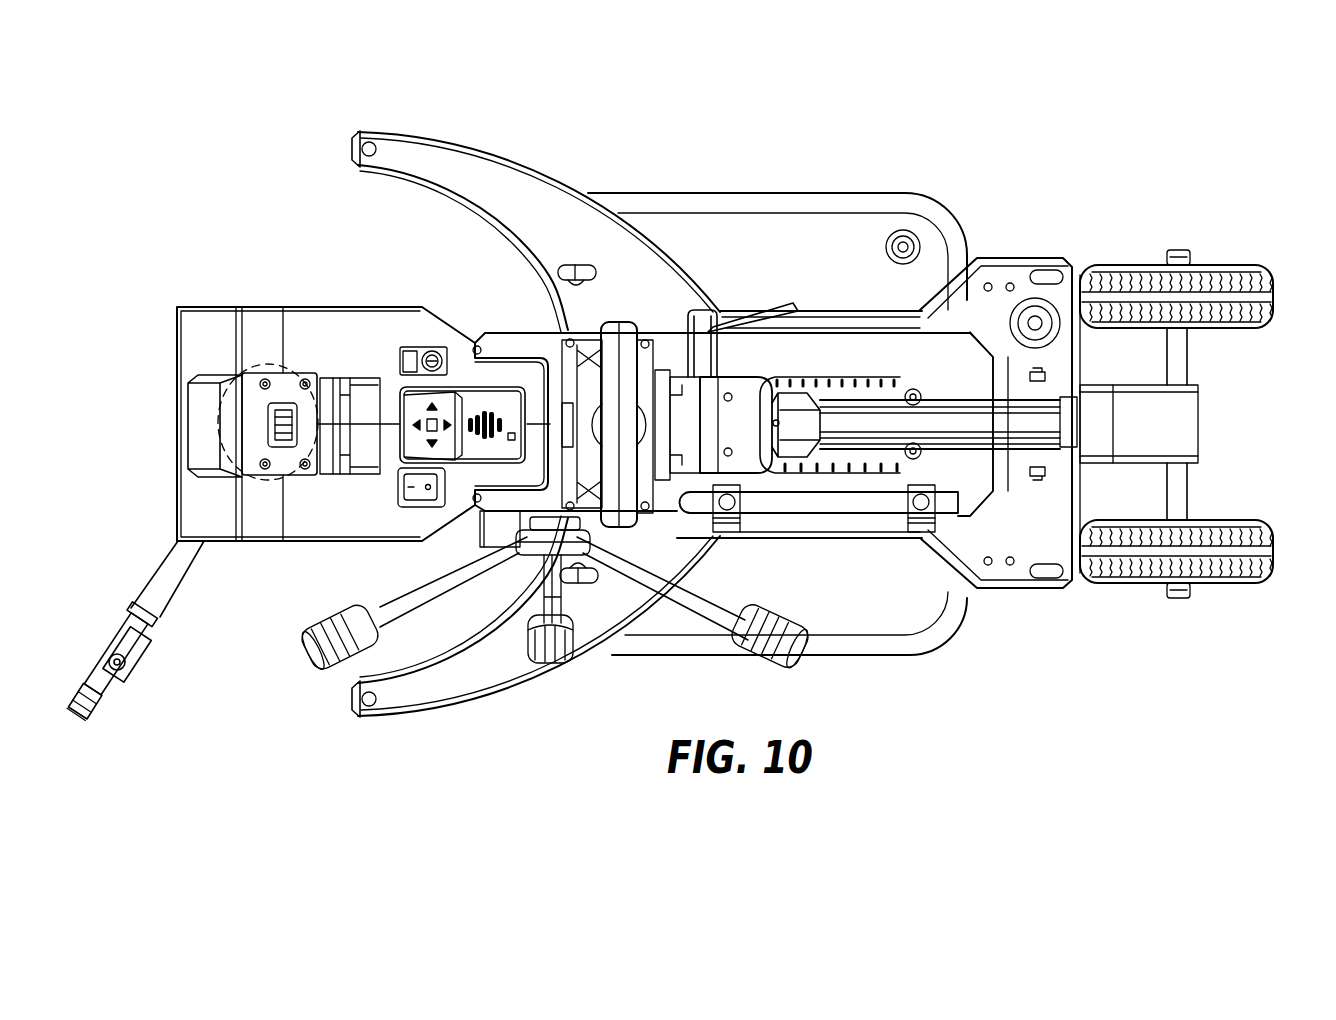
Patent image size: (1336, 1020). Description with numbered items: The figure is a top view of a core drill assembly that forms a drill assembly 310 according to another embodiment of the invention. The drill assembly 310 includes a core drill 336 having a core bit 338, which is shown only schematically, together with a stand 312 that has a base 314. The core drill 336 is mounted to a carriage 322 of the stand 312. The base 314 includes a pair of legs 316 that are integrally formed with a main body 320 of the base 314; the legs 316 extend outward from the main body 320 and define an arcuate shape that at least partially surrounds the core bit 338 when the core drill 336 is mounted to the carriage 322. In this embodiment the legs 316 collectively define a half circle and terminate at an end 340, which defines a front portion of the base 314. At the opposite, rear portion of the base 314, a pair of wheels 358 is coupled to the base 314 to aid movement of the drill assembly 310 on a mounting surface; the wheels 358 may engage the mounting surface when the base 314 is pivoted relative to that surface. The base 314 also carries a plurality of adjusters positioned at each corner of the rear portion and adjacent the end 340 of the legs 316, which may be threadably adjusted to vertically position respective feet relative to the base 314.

The drill assembly 310 is at (942, 124).
The stand 312 is at (745, 148).
The base 314 is at (897, 600).
The legs 316 is at (395, 150).
The main body 320 is at (1007, 587).
The carriage 322 is at (500, 327).
The core drill 336 is at (257, 306).
The core bit 338 is at (267, 483).
The end 340 is at (348, 150).
The wheels 358 is at (1277, 277).